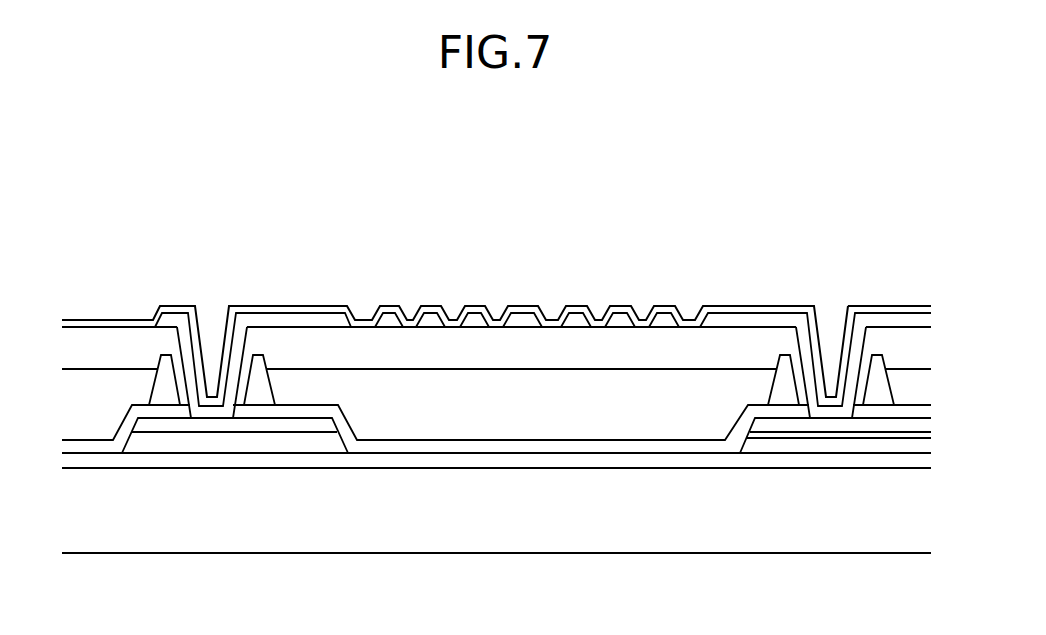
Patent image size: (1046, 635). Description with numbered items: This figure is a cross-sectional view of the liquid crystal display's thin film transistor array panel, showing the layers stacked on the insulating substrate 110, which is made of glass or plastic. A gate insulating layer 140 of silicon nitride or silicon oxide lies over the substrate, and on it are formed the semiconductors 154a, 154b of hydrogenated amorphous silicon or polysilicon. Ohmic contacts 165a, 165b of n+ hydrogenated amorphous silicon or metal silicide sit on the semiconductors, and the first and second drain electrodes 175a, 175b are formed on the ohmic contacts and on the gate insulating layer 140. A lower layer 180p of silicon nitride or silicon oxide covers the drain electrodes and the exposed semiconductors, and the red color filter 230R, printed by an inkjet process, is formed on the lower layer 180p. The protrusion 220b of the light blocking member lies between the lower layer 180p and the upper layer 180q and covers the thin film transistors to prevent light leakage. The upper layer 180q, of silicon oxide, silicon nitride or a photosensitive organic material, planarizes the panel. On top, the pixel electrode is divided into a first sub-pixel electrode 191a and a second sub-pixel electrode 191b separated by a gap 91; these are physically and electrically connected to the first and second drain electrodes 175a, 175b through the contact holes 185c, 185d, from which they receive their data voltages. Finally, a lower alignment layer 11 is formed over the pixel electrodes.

The lower alignment layer 11 is at (910, 307).
The gap 91 is at (360, 318).
The insulating substrate 110 is at (490, 522).
The gate insulating layer 140 is at (558, 462).
The semiconductor 154a is at (767, 449).
The semiconductor 154b is at (173, 448).
The ohmic contact 165a is at (807, 437).
The ohmic contact 165b is at (218, 437).
The first drain electrode 175a is at (832, 427).
The second drain electrode 175b is at (252, 427).
The lower layer 180p is at (640, 447).
The upper layer 180q is at (92, 347).
The contact hole 185c is at (863, 343).
The contact hole 185d is at (180, 346).
The first sub-pixel electrode 191a is at (710, 320).
The second sub-pixel electrode 191b is at (315, 322).
The protrusion 220b is at (257, 362).
The red color filter 230R is at (90, 417).